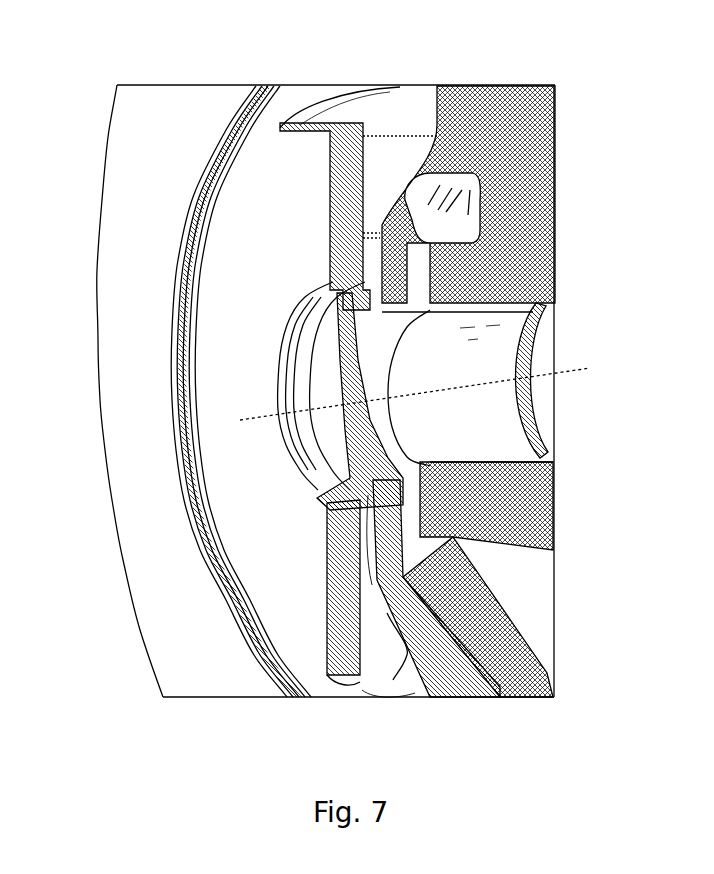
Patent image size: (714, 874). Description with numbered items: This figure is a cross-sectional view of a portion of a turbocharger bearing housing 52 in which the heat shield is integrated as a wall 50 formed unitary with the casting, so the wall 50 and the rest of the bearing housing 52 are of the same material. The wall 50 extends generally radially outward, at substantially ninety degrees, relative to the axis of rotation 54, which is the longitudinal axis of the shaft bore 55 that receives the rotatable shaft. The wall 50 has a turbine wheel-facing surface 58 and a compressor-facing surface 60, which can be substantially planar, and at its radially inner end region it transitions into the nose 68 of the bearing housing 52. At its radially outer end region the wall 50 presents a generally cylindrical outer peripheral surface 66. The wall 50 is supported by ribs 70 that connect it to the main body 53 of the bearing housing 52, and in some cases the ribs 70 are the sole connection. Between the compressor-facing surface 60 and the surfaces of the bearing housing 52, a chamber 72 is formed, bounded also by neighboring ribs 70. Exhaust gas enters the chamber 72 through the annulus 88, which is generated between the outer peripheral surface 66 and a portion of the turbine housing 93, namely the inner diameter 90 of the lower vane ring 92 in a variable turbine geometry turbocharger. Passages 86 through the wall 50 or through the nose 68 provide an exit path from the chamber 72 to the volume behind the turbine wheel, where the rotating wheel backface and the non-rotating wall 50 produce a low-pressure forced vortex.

The wall 50 is at (268, 228).
The bearing housing 52 is at (555, 117).
The main body 53 is at (540, 188).
The axis of rotation 54 is at (575, 372).
The shaft bore 55 is at (553, 483).
The turbine wheel-facing surface 58 is at (327, 588).
The compressor-facing surface 60 is at (365, 688).
The outer peripheral surface 66 is at (283, 697).
The nose 68 is at (325, 503).
The ribs 70 is at (447, 690).
The chamber 72 is at (403, 130).
The passages 86 is at (318, 508).
The annulus 88 is at (266, 656).
The inner diameter 90 is at (240, 700).
The lower vane ring 92 is at (184, 689).
The turbine housing 93 is at (141, 635).